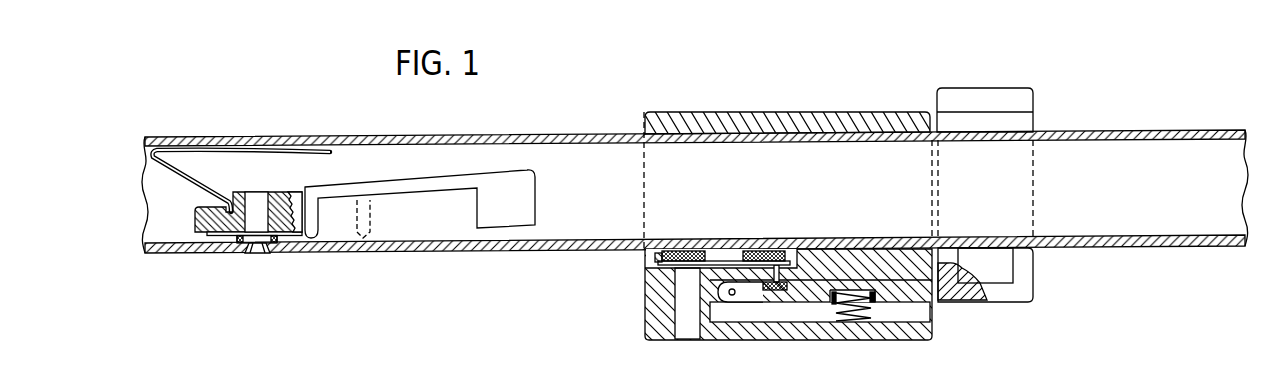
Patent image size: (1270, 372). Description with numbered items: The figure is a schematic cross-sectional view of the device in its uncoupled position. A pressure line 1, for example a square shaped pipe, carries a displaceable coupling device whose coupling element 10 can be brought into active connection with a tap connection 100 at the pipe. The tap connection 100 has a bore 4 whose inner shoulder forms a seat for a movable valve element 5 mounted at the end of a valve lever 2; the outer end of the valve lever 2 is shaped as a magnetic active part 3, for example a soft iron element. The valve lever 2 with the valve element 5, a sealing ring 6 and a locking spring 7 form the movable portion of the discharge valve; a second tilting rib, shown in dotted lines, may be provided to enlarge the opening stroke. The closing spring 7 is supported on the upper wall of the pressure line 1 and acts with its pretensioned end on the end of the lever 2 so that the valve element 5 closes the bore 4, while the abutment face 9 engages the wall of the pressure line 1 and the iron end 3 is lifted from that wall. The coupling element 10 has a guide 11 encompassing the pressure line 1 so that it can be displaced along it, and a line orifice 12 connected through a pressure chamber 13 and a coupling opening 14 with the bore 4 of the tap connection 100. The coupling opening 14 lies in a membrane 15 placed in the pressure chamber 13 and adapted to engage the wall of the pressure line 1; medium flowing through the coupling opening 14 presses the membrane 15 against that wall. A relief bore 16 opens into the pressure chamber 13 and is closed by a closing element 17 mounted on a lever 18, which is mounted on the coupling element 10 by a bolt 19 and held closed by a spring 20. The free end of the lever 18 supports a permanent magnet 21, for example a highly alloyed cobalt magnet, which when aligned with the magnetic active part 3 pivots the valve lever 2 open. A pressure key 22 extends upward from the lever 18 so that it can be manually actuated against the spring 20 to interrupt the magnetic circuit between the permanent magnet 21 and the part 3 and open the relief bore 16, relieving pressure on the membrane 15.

The pressure line 1 is at (347, 139).
The valve lever 2 is at (411, 228).
The magnetic active part 3 is at (540, 212).
The bore 4 is at (258, 244).
The movable valve element 5 is at (253, 192).
The sealing ring 6 is at (238, 243).
The locking spring 7 is at (272, 150).
The abutment face 9 is at (202, 234).
The coupling element 10 is at (614, 277).
The guide 11 is at (657, 122).
The line orifice 12 is at (688, 328).
The pressure chamber 13 is at (683, 252).
The coupling opening 14 is at (729, 252).
The membrane 15 is at (771, 252).
The relief bore 16 is at (813, 266).
The closing element 17 is at (783, 293).
The lever 18 is at (950, 292).
The bolt 19 is at (733, 296).
The spring 20 is at (857, 322).
The permanent magnet 21 is at (1002, 270).
The pressure key 22 is at (1022, 104).
The tap connection 100 is at (255, 268).